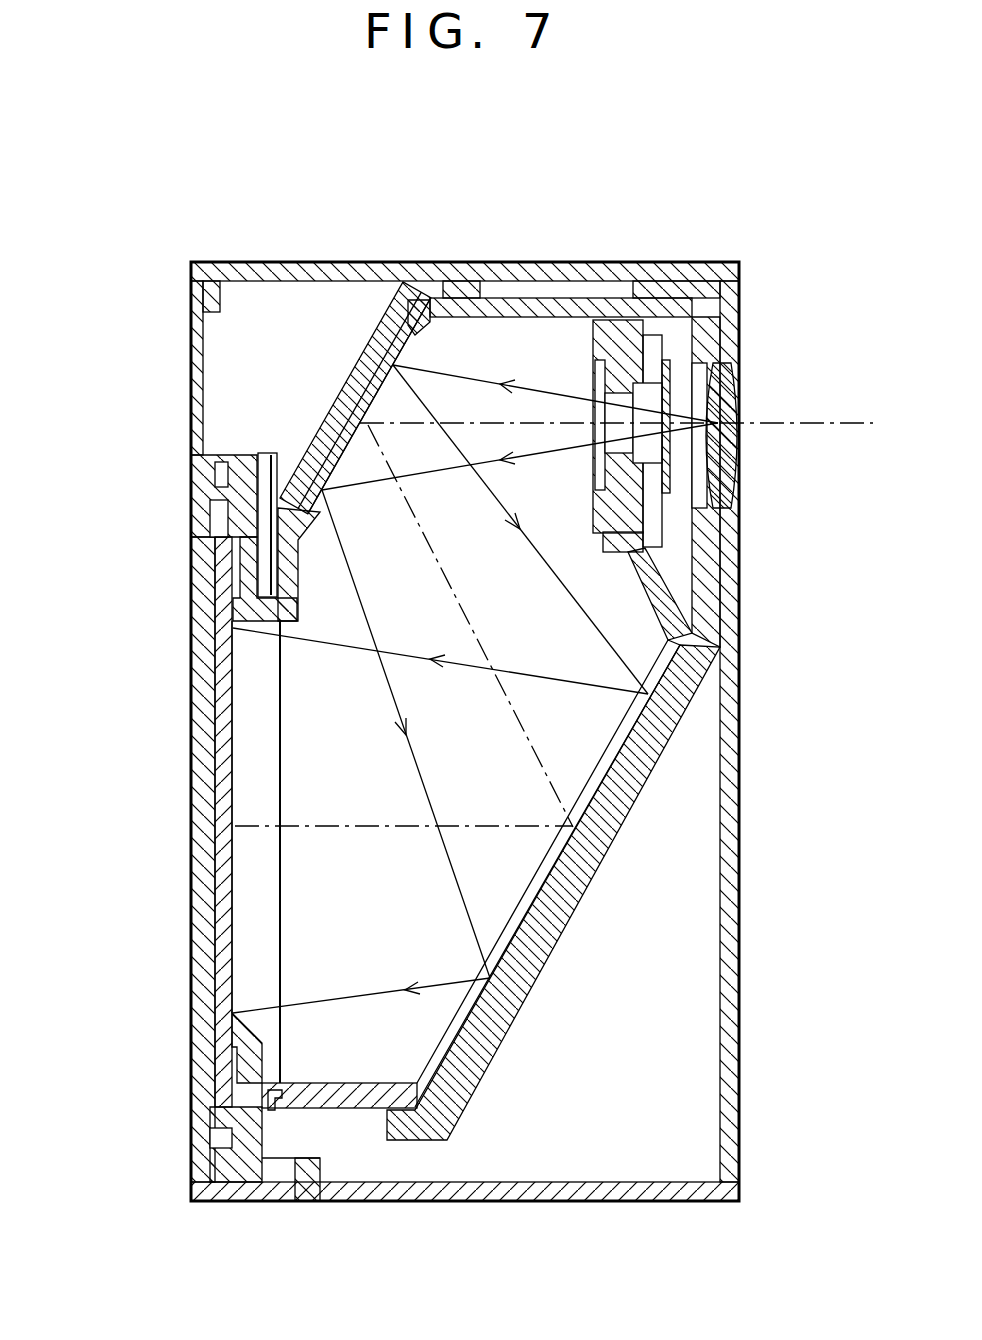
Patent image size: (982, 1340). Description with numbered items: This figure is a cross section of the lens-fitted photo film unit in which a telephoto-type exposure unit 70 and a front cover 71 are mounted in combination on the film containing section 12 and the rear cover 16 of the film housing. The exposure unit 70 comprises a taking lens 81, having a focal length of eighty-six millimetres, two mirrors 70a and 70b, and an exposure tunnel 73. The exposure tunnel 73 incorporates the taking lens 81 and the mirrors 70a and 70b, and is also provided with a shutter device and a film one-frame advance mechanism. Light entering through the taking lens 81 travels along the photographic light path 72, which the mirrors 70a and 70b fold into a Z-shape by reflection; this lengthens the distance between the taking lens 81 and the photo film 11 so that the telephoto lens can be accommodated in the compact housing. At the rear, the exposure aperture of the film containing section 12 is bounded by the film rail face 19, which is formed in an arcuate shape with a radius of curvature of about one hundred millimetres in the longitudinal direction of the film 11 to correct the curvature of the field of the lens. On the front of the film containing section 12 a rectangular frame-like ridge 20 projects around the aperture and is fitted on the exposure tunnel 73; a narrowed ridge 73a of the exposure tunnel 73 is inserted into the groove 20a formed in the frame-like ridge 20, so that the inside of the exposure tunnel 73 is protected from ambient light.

The photo film 11 is at (220, 740).
The film containing section 12 is at (360, 1167).
The rear cover 16 is at (155, 588).
The film rail face 19 is at (232, 618).
The frame-like ridge 20 is at (281, 1085).
The groove 20a is at (268, 600).
The exposure unit 70 is at (340, 340).
The mirror 70a is at (332, 452).
The mirror 70b is at (567, 858).
The front cover 71 is at (679, 230).
The photographic light path 72 is at (843, 428).
The exposure tunnel 73 is at (456, 1060).
The narrowed ridge 73a is at (282, 1092).
The taking lens 81 is at (728, 378).